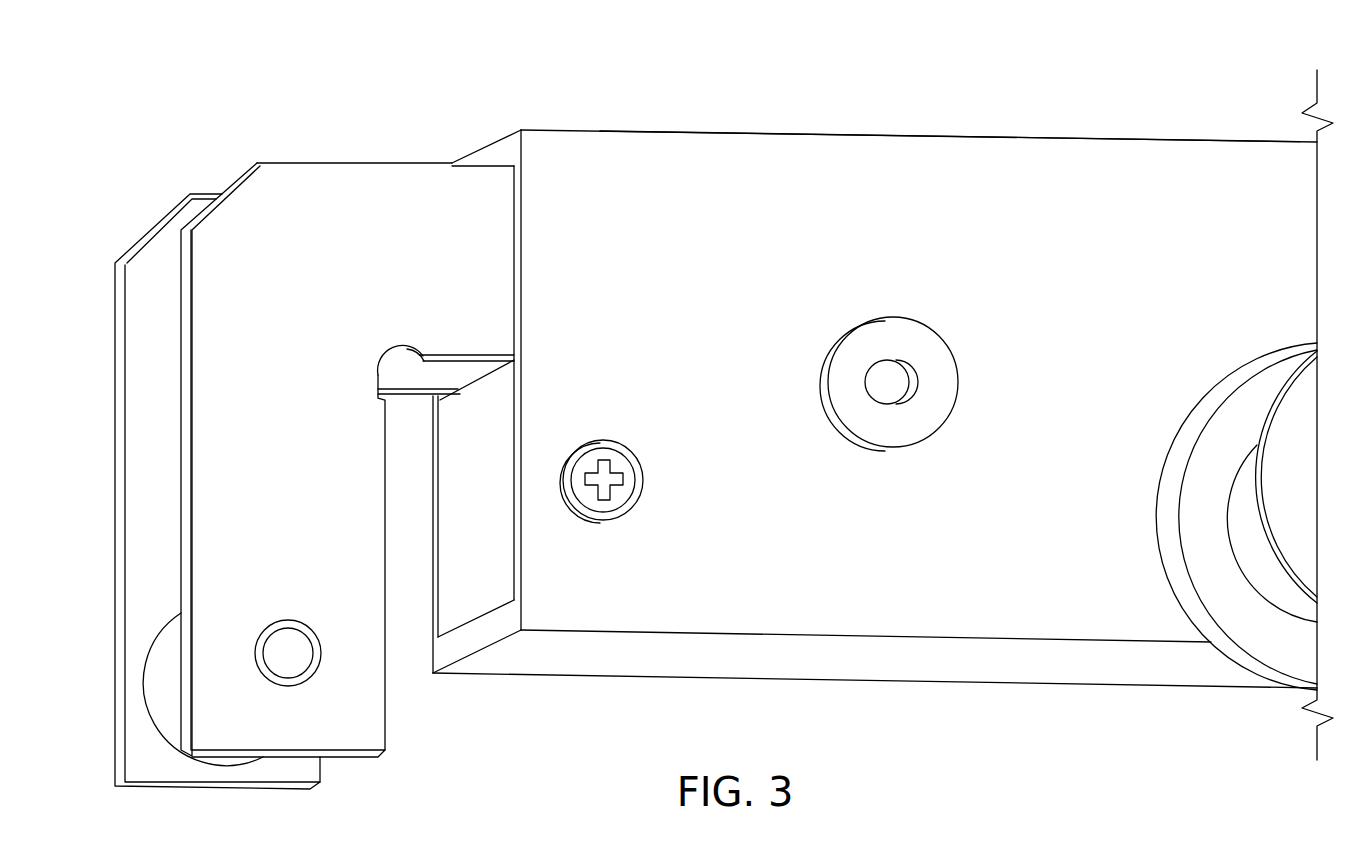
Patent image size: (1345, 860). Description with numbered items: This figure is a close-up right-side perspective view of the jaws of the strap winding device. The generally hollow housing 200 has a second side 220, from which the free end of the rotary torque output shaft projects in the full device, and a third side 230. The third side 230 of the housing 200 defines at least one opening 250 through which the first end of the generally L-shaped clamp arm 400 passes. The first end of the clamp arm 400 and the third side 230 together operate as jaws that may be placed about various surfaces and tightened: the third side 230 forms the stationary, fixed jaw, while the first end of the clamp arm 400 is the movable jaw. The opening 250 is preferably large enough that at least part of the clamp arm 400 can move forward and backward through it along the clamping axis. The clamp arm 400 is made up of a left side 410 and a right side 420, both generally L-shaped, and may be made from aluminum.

The housing 200 is at (870, 131).
The second side 220 is at (1032, 157).
The third side 230 is at (473, 587).
The opening 250 is at (463, 375).
The clamp arm 400 is at (274, 427).
The left side 410 is at (115, 410).
The right side 420 is at (180, 542).